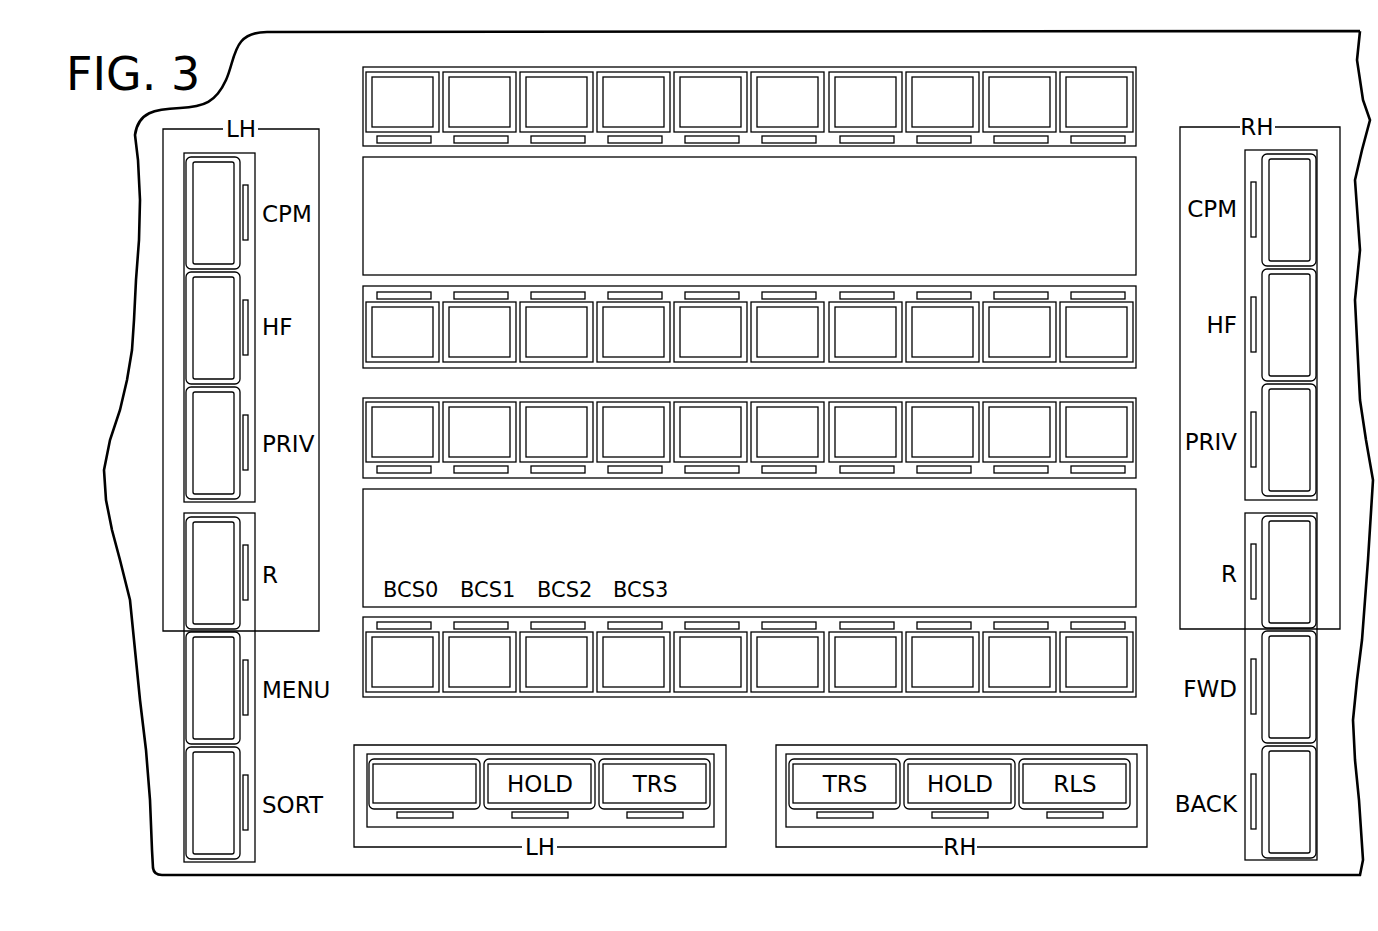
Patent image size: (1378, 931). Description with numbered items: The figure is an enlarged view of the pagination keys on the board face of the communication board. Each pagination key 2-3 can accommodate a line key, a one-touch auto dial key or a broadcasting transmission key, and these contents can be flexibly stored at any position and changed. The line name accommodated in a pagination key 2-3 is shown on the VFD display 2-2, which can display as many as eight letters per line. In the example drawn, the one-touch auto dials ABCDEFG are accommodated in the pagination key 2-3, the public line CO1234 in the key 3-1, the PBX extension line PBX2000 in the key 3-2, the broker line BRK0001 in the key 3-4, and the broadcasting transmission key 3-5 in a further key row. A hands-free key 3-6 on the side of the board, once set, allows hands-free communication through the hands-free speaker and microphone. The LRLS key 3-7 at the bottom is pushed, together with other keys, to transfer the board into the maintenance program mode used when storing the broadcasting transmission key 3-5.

The VFD display 2-2 is at (1123, 185).
The pagination key 2-3 is at (412, 88).
The pagination key for public line 3-1 is at (491, 88).
The pagination key for PBX extension line 3-2 is at (570, 88).
The pagination key for broker line 3-4 is at (389, 336).
The broadcasting transmission key 3-5 is at (392, 667).
The hands-free key 3-6 is at (210, 316).
The LRLS key 3-7 is at (386, 786).